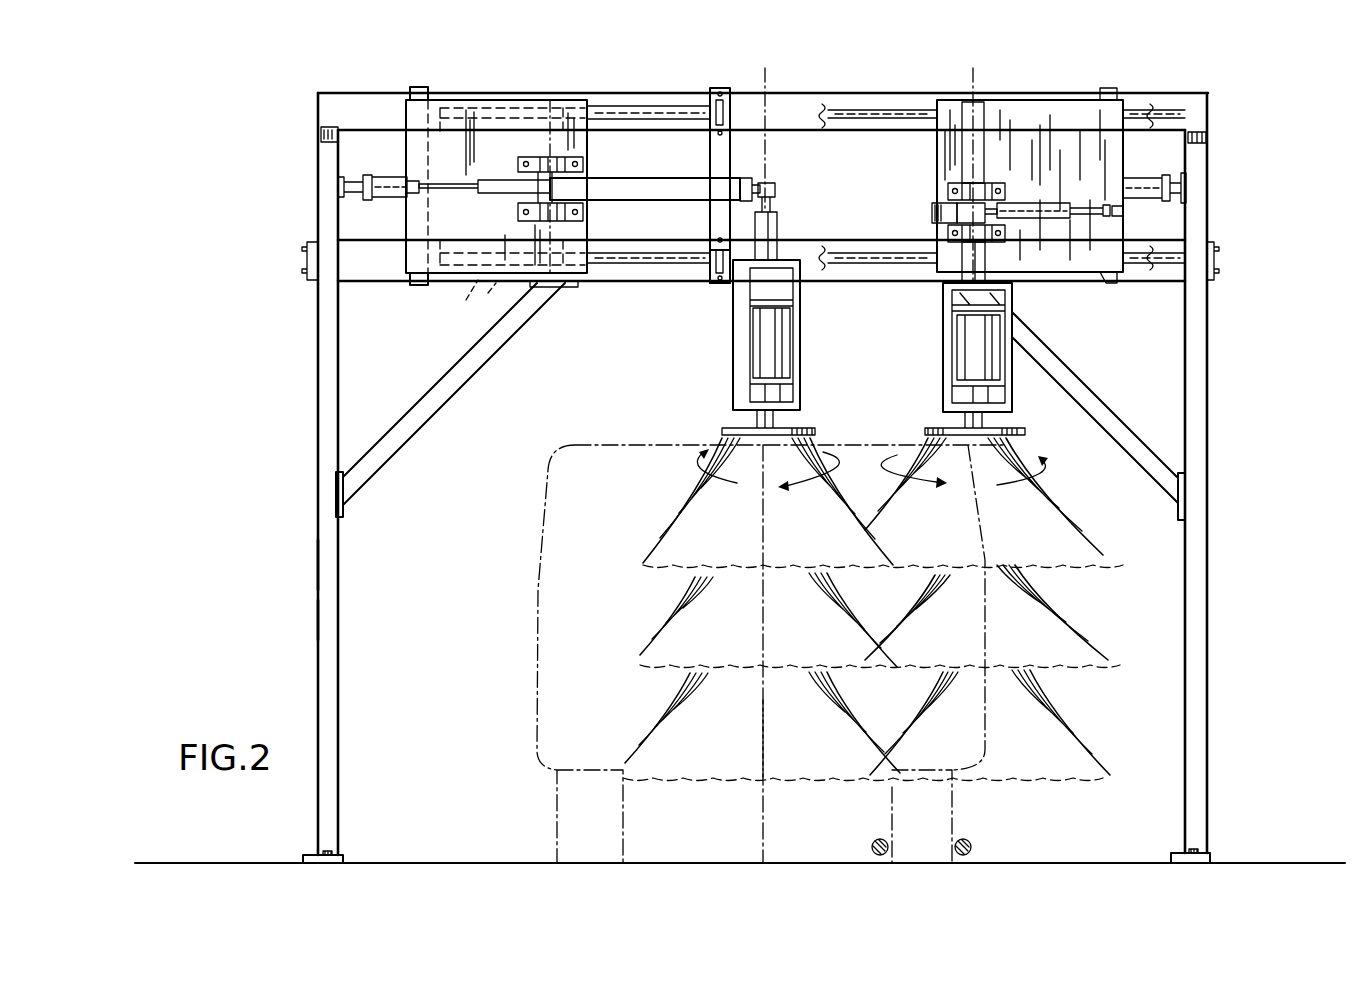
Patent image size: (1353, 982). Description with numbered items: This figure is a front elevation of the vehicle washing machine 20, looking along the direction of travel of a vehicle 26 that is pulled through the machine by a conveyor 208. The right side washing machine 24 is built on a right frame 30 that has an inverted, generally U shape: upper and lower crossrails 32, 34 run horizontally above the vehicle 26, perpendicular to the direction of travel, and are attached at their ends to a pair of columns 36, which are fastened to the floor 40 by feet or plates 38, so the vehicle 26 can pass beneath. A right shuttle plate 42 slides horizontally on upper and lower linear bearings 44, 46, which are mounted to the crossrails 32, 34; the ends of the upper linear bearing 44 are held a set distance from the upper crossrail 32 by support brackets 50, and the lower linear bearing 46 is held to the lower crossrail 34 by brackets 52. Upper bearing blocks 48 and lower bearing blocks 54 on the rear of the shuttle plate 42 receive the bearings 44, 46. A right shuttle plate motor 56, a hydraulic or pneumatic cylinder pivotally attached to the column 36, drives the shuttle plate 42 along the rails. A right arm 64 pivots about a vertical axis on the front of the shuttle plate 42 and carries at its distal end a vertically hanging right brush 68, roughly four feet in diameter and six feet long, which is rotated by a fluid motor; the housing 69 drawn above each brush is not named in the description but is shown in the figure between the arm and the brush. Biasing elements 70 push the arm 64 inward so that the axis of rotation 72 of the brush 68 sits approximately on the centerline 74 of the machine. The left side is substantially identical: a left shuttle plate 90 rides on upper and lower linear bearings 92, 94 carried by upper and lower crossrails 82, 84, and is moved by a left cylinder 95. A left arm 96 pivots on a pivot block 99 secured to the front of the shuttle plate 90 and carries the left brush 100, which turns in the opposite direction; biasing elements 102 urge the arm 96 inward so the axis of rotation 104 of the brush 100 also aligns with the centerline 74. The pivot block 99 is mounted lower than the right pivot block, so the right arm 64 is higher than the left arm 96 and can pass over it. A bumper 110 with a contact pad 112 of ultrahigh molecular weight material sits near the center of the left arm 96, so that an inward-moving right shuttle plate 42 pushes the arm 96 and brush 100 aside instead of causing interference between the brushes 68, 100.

The vehicle washing machine 20 is at (1253, 221).
The right side washing machine 24 is at (296, 566).
The vehicle 26 is at (540, 510).
The right frame 30 is at (318, 618).
The upper crossrail 32 is at (328, 100).
The lower crossrail 34 is at (370, 284).
The columns 36 is at (318, 408).
The feet or plates 38 is at (346, 853).
The floor 40 is at (210, 862).
The right shuttle plate 42 is at (500, 100).
The upper linear bearing 44 is at (636, 106).
The lower linear bearing 46 is at (650, 265).
The upper bearing blocks 48 is at (455, 107).
The support brackets 50 is at (414, 87).
The brackets 52 is at (418, 287).
The bearing blocks 54 is at (480, 284).
The right shuttle plate motor 56 is at (390, 180).
The right arm 64 is at (655, 195).
The right brush 68 is at (683, 540).
The spindle motor housing 69 is at (757, 347).
The biasing elements 70 is at (497, 196).
The axis of rotation 72 is at (766, 152).
The centerline 74 is at (765, 712).
The upper crossrail 82 is at (892, 110).
The lower crossrail 84 is at (886, 284).
The left shuttle plate 90 is at (1062, 115).
The upper linear bearing 92 is at (832, 110).
The lower linear bearing 94 is at (840, 266).
The left cylinder 95 is at (1143, 178).
The left arm 96 is at (990, 182).
The pivot block 99 is at (952, 183).
The left brush 100 is at (1082, 533).
The biasing elements 102 is at (1036, 218).
The axis of rotation 104 is at (967, 100).
The bumper 110 is at (948, 203).
The contact pad 112 is at (932, 214).
The conveyor 208 is at (972, 840).